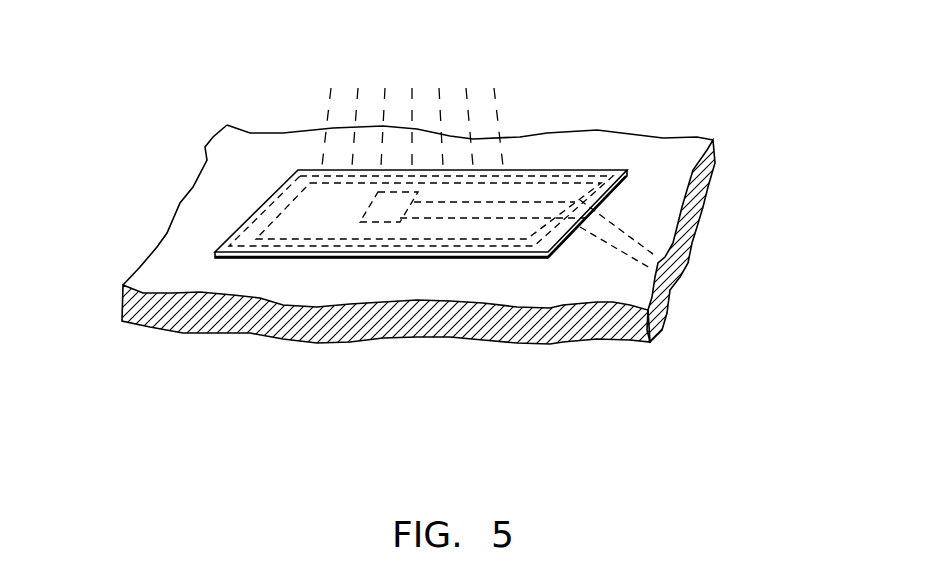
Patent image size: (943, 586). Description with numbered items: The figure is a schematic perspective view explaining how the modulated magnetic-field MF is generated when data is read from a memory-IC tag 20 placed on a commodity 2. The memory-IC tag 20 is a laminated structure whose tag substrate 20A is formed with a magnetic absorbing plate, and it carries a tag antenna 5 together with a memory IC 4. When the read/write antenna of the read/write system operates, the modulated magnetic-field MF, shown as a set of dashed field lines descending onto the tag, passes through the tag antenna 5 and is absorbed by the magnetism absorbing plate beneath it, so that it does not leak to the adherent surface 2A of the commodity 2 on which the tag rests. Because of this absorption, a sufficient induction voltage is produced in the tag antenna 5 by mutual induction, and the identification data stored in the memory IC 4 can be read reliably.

The commodity 2 is at (180, 233).
The adherent surface 2A is at (549, 299).
The memory-IC tag 20 is at (448, 270).
The tag substrate 20A is at (264, 209).
The memory IC 4 is at (396, 290).
The tag antenna 5 is at (672, 272).
The modulated magnetic-field MF is at (505, 88).